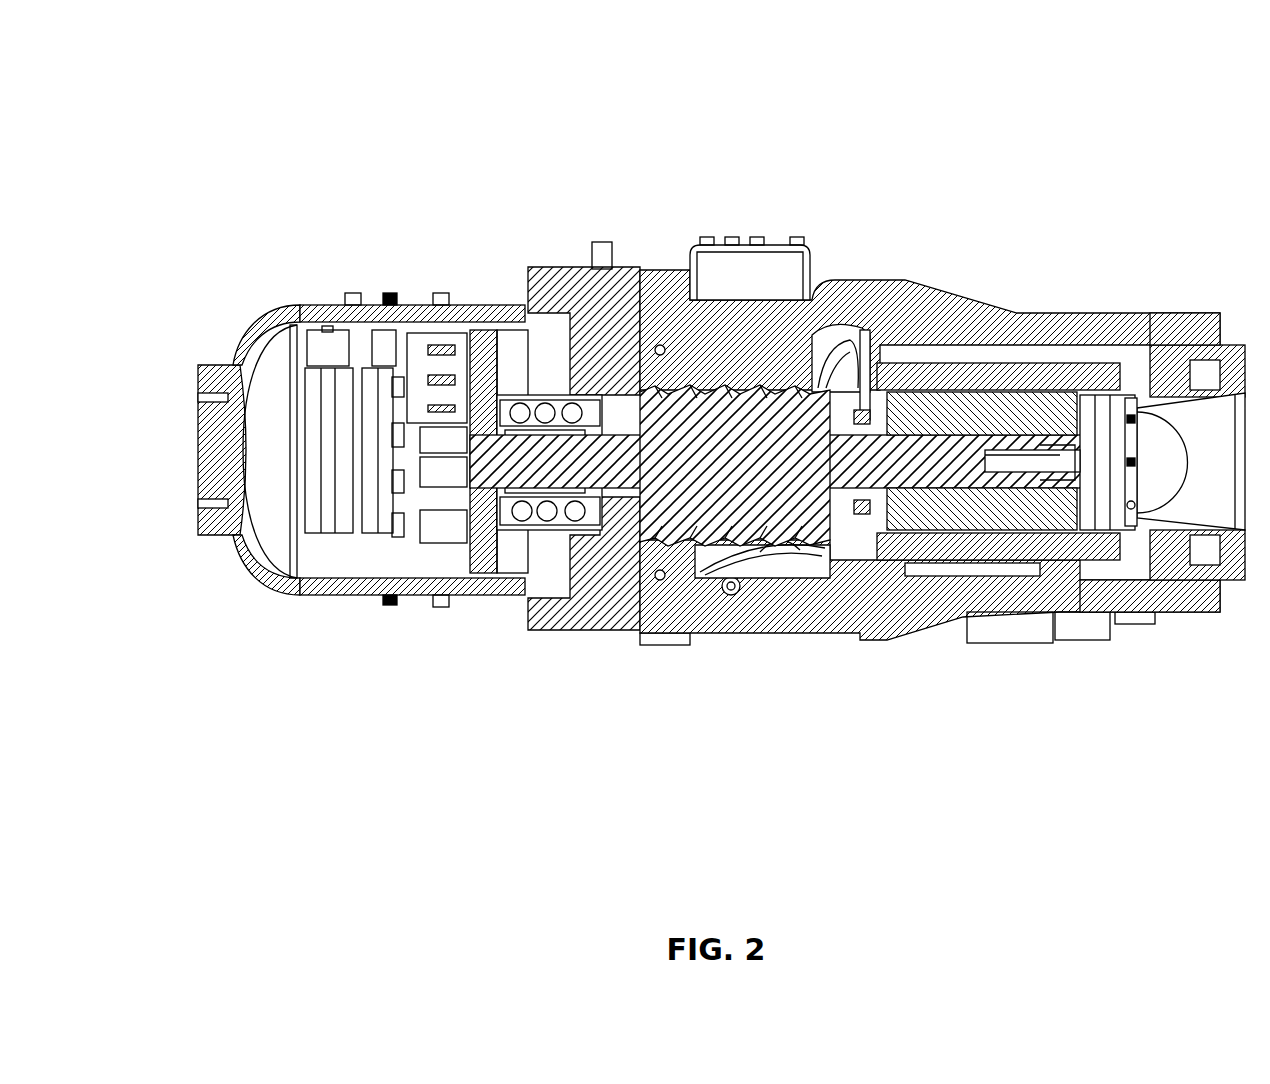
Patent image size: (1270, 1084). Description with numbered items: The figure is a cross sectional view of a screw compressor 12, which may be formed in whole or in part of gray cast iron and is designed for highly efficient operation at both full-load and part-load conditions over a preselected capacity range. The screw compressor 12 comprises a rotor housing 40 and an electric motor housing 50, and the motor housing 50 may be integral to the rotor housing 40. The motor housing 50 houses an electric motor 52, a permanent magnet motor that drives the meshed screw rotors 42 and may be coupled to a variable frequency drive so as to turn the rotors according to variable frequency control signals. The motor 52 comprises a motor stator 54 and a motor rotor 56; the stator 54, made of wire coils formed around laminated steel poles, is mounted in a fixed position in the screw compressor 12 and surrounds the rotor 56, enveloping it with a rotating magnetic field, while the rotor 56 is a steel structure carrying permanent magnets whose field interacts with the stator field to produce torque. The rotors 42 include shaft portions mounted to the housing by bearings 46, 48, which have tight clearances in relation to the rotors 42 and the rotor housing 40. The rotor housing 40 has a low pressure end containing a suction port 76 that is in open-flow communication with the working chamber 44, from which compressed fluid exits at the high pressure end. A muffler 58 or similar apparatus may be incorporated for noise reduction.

The screw compressor 12 is at (221, 127).
The rotor housing 40 is at (771, 645).
The meshed screw rotors 42 is at (648, 495).
The working chamber 44 is at (652, 390).
The bearing 46 is at (526, 505).
The bearing 48 is at (862, 420).
The electric motor housing 50 is at (928, 634).
The electric motor 52 is at (1105, 558).
The motor stator 54 is at (970, 385).
The motor rotor 56 is at (970, 423).
The muffler 58 is at (430, 578).
The suction port 76 is at (836, 370).